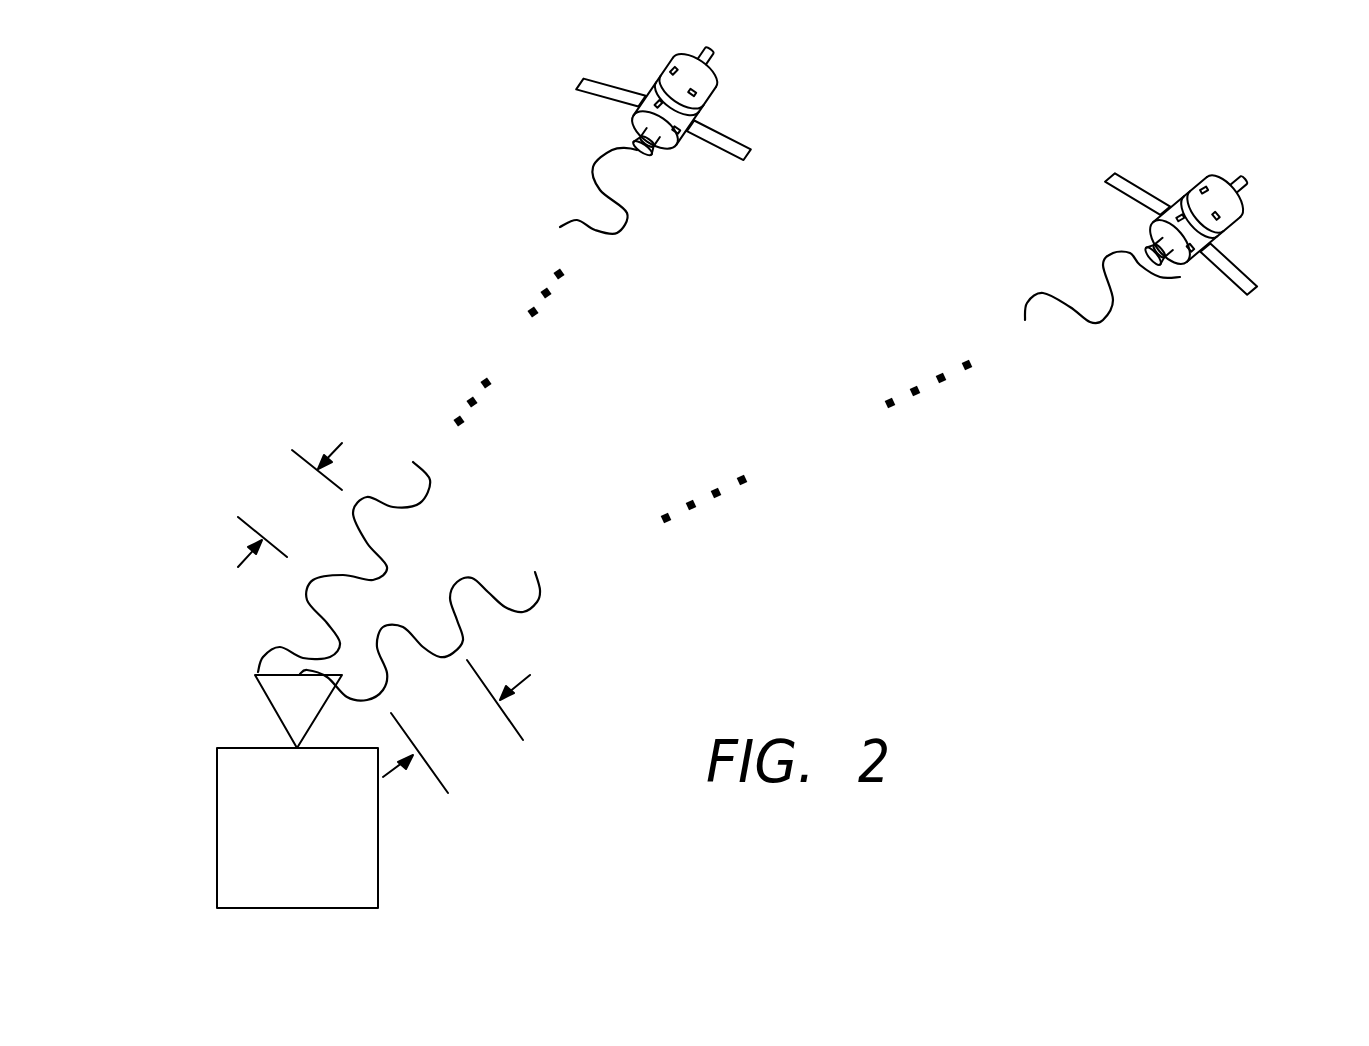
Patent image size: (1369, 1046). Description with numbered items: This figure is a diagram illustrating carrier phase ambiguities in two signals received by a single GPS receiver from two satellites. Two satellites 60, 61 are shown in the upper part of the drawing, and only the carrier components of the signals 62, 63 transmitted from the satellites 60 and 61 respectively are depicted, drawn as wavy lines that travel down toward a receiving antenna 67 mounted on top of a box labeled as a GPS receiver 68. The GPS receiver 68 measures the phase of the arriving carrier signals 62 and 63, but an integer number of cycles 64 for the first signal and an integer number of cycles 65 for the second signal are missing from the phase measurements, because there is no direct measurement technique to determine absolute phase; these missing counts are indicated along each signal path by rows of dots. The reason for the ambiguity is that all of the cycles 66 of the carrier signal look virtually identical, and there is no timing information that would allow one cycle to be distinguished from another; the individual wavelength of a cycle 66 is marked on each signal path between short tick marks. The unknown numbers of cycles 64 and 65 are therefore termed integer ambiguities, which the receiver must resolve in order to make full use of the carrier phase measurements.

The satellite 60 is at (713, 73).
The satellite 61 is at (1240, 220).
The signal 62 is at (622, 227).
The signal 63 is at (1103, 323).
The integer number of cycles 64 is at (540, 360).
The integer number of cycles 65 is at (850, 465).
The cycles 66 is at (280, 496).
The antenna 67 is at (265, 697).
The GPS receiver 68 is at (217, 826).